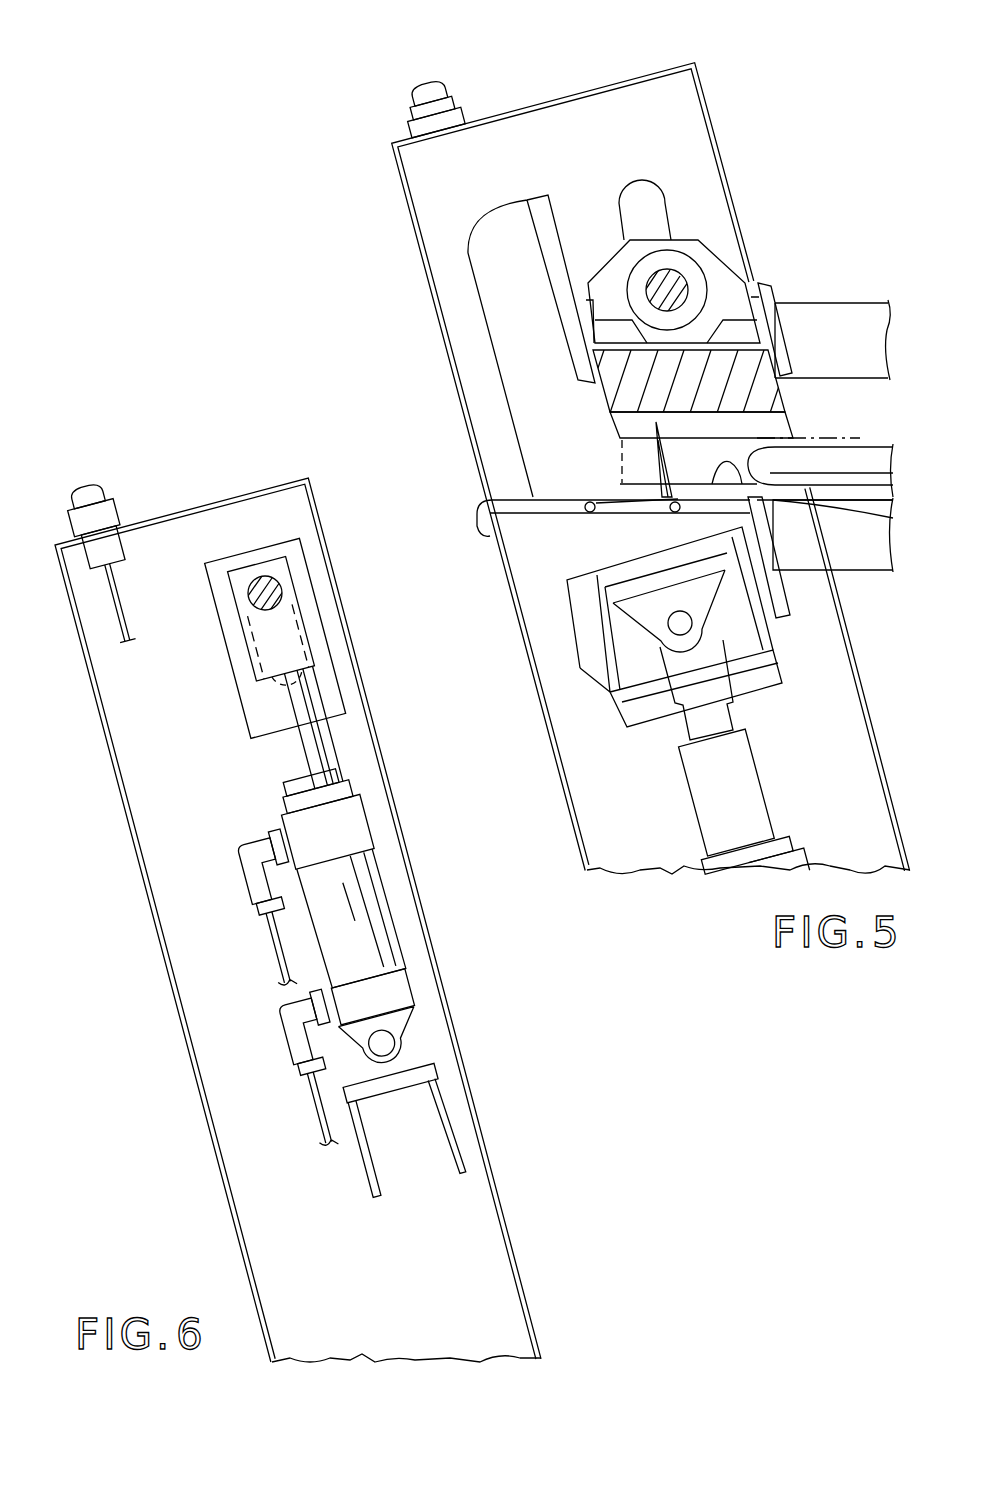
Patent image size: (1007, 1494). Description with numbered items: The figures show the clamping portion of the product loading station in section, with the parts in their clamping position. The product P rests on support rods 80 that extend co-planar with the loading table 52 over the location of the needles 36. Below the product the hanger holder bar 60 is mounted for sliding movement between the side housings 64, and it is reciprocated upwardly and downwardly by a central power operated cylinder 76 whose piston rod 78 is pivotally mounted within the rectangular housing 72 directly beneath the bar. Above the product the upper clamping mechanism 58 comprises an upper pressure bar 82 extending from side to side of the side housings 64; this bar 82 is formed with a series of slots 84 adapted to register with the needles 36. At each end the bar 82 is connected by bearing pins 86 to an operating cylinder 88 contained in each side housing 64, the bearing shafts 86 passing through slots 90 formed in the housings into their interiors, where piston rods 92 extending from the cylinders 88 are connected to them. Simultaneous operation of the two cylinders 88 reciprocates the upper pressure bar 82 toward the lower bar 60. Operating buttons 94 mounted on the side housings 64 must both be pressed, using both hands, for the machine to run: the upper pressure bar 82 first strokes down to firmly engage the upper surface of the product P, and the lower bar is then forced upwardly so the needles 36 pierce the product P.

In FIG. 5, the needles 36 is at (662, 457).
In FIG. 5, the loading table 52 is at (835, 490).
In FIG. 5, the upper clamping mechanism 58 is at (774, 248).
In FIG. 5, the hanger holder bar 60 is at (572, 563).
In FIG. 6, the side housing 64 is at (130, 845).
In FIG. 5, the rectangular housing 72 is at (778, 622).
In FIG. 5, the central power operated cylinder 76 is at (803, 855).
In FIG. 5, the piston rod 78 is at (748, 764).
In FIG. 5, the support rods 80 is at (776, 501).
In FIG. 5, the upper pressure bar 82 is at (625, 385).
In FIG. 5, the slots 84 is at (697, 427).
In FIG. 5, the bearing pins 86 is at (668, 290).
In FIG. 6, the bearing pins 86 is at (265, 578).
In FIG. 6, the operating cylinder 88 is at (327, 922).
In FIG. 5, the slots 90 is at (633, 182).
In FIG. 6, the slots 90 is at (262, 653).
In FIG. 6, the piston rods 92 is at (285, 750).
In FIG. 5, the operating buttons 94 is at (442, 88).
In FIG. 6, the operating buttons 94 is at (93, 490).
In FIG. 5, the product P is at (812, 438).